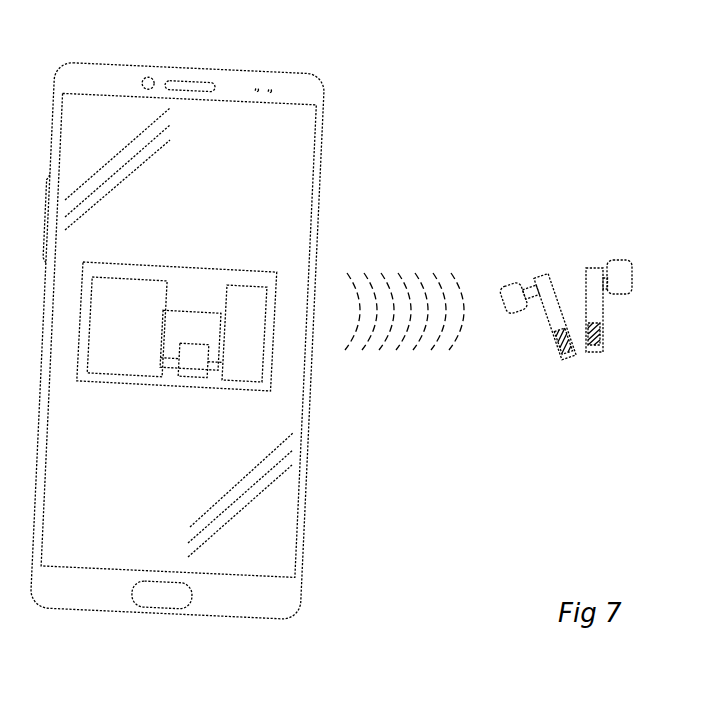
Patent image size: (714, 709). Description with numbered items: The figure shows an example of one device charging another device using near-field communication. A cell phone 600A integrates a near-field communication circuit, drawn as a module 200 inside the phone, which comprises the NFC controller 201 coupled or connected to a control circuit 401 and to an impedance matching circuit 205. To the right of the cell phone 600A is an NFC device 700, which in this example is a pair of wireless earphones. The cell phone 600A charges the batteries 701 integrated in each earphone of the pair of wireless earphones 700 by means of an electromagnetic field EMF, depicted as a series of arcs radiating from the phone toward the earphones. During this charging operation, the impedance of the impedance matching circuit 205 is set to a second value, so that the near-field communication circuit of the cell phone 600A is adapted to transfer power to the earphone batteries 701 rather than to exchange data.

The cell phone 600A is at (170, 67).
The wireless charging module 200 is at (164, 262).
The NFC controller 201 is at (113, 378).
The control circuit 401 is at (187, 380).
The impedance matching circuit 205 is at (248, 385).
The electromagnetic field EMF is at (408, 370).
The NFC device 700 is at (570, 248).
The batteries 701 is at (548, 352).